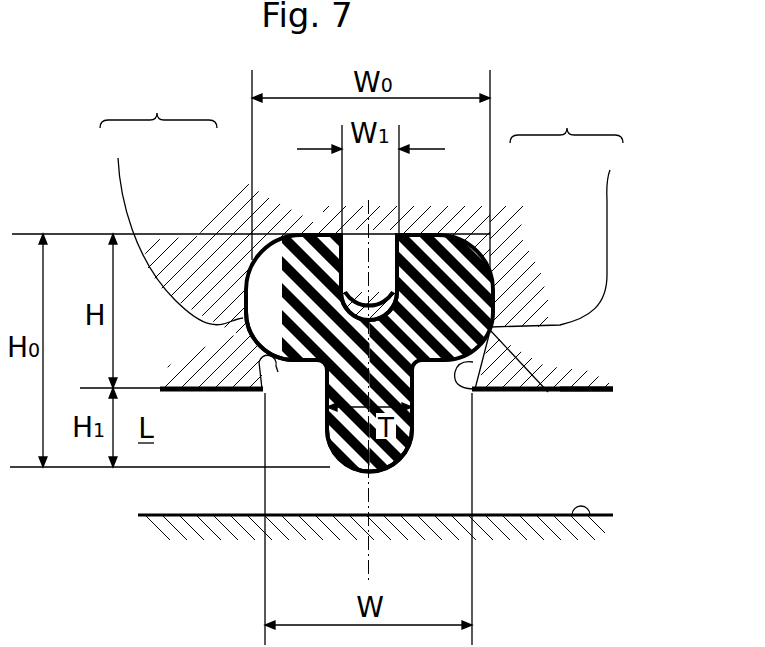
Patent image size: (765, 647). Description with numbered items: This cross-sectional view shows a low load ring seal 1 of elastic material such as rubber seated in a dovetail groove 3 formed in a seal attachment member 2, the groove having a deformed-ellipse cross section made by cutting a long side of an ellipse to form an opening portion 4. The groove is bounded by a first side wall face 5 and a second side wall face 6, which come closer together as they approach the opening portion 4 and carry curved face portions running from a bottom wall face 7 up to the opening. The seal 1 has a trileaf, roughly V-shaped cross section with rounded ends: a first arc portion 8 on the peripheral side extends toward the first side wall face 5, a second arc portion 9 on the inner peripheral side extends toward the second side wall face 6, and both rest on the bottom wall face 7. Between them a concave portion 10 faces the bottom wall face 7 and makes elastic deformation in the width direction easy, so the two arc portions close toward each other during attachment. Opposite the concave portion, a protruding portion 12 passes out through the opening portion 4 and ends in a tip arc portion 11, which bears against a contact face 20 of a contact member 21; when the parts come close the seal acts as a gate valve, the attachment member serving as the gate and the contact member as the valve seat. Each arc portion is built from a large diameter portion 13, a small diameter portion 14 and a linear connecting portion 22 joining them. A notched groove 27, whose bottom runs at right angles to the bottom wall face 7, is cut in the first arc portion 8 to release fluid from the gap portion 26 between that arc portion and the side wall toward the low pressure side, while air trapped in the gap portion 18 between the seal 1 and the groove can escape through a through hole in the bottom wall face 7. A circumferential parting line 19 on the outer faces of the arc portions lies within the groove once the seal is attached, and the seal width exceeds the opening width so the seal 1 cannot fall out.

The seal 1 is at (540, 392).
The seal attachment member 2 is at (563, 392).
The dovetail groove 3 is at (300, 361).
The opening portion 4 is at (441, 393).
The first side wall face 5 is at (262, 392).
The second side wall face 6 is at (478, 398).
The bottom wall face 7 is at (350, 234).
The first arc portion 8 is at (158, 103).
The second arc portion 9 is at (566, 118).
The concave portion 10 is at (372, 234).
The tip arc portion 11 is at (390, 470).
The protruding portion 12 is at (412, 422).
The large diameter portion 13 is at (382, 261).
The small diameter portion 14 is at (323, 234).
The gap portion 18 is at (357, 321).
The parting line 19 is at (228, 312).
The contact face 20 is at (588, 516).
The contact member 21 is at (482, 578).
The linear connecting portion 22 is at (285, 266).
The gap portion 26 is at (235, 238).
The notched groove 27 is at (243, 337).